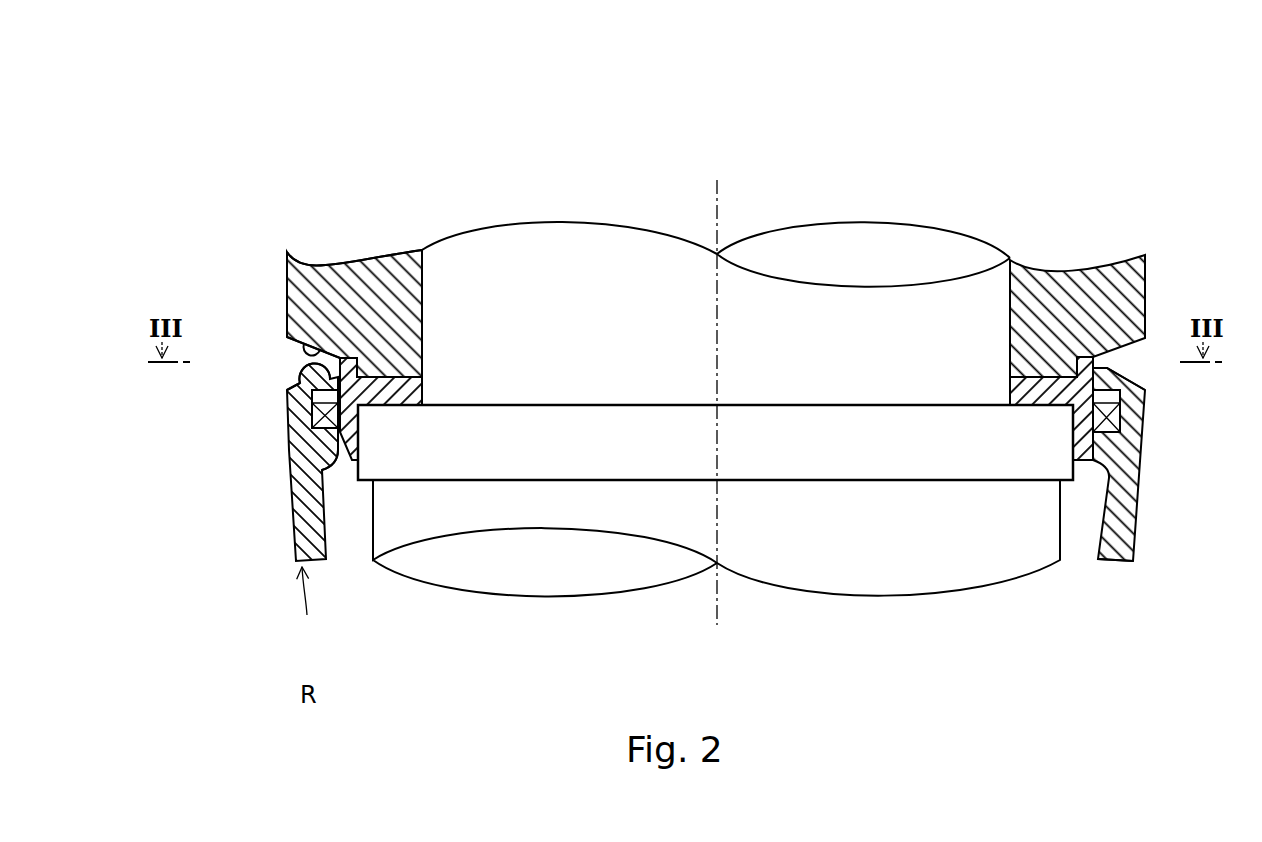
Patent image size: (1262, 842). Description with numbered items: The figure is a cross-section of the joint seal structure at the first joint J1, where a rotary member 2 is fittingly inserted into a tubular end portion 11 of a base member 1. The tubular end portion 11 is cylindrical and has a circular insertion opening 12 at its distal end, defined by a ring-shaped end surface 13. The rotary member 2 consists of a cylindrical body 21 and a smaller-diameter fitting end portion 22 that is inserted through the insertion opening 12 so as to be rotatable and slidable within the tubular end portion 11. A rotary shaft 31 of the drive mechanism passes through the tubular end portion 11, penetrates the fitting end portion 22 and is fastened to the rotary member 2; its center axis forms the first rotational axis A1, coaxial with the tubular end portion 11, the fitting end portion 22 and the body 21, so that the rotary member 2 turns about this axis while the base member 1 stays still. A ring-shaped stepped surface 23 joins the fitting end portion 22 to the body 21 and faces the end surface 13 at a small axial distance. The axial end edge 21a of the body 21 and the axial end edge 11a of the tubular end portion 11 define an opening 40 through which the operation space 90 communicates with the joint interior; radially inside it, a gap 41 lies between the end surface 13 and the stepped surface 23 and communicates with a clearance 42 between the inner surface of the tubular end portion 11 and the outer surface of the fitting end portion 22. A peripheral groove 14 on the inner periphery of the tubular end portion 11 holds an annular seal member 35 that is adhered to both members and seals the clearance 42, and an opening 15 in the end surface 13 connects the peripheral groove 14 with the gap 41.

The first joint J1 is at (1169, 198).
The rotary member 2 is at (1107, 256).
The first rotational axis A1 is at (720, 202).
The body 21 is at (1128, 290).
The axial end edge of the outer peripheral surface of the body 21a is at (286, 337).
The fitting end portion 22 is at (1028, 392).
The insertion opening 12 is at (1059, 366).
The opening 15 is at (344, 380).
The stepped surface 23 is at (336, 366).
The opening 40 is at (292, 356).
The gap 41 is at (296, 366).
The tubular end portion 11 is at (1127, 505).
The axial end edge of the outer peripheral surface of the tubular end portion 11a is at (287, 390).
The end surface 13 is at (288, 447).
The seal member 35 is at (1116, 428).
The peripheral groove 14 is at (1114, 392).
The clearance 42 is at (348, 472).
The base member 1 is at (1112, 568).
The rotary shaft 31 is at (887, 580).
The operation space 90 is at (167, 496).